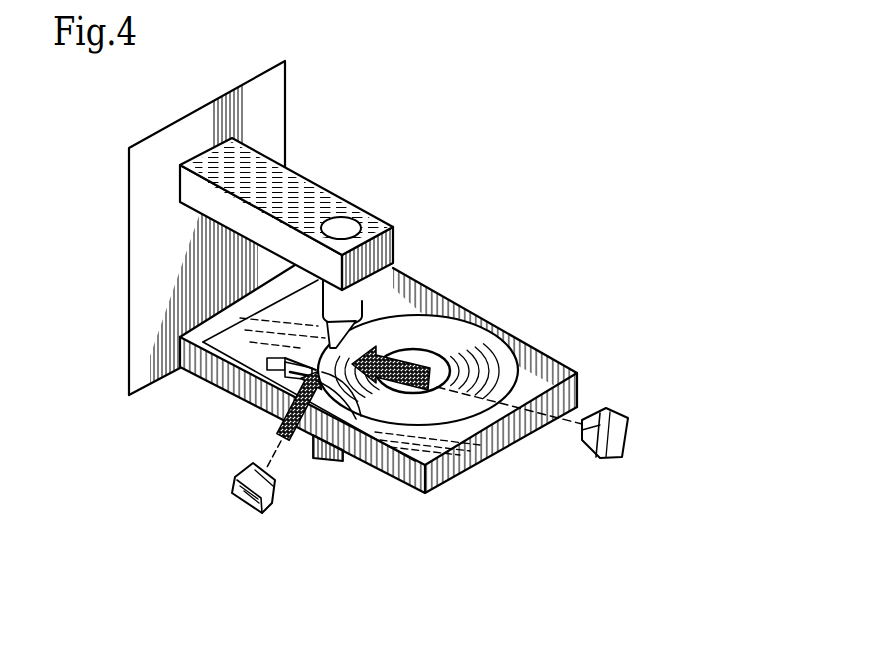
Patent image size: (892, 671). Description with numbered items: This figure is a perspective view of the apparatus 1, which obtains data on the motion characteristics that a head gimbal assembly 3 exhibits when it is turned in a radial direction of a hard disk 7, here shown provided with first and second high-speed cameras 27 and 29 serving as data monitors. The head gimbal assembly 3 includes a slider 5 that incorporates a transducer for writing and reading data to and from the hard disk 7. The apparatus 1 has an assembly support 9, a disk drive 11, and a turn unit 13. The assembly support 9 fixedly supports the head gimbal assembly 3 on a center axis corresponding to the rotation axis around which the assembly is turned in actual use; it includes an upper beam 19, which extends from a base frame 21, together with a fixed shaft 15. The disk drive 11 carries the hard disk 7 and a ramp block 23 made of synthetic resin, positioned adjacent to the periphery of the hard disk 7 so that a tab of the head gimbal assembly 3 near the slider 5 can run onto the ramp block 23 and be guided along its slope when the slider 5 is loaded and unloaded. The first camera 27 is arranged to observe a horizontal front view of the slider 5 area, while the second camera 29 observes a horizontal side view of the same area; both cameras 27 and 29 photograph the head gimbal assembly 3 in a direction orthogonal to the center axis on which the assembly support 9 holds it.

The apparatus 1 is at (388, 176).
The head gimbal assembly 3 is at (412, 311).
The slider 5 is at (358, 405).
The hard disk 7 is at (506, 346).
The assembly support 9 is at (391, 216).
The disk drive 11 is at (580, 374).
The turn unit 13 is at (309, 458).
The fixed shaft 15 is at (372, 300).
The upper beam 19 is at (310, 190).
The base frame 21 is at (272, 92).
The ramp block 23 is at (305, 376).
The first high-speed camera 27 is at (256, 506).
The second high-speed camera 29 is at (628, 436).